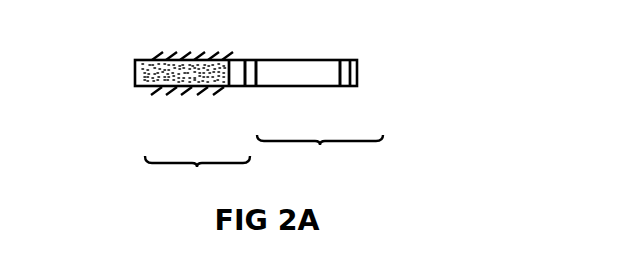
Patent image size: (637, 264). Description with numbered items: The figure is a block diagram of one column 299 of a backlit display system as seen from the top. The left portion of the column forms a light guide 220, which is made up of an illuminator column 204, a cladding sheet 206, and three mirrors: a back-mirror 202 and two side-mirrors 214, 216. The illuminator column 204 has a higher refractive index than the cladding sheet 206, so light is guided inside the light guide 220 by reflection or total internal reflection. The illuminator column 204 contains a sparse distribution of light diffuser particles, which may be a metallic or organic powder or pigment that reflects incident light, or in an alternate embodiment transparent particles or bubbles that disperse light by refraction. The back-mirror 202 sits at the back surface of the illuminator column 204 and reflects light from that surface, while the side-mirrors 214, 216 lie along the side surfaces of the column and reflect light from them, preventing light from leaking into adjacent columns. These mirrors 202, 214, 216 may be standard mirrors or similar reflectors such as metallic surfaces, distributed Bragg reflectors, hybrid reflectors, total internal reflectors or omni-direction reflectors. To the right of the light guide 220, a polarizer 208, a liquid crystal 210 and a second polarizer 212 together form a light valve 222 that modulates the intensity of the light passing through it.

The back-mirror 202 is at (137, 70).
The illuminator column 204 is at (178, 93).
The cladding sheet 206 is at (237, 86).
The polarizer 208 is at (256, 86).
The liquid crystal 210 is at (316, 86).
The polarizer 212 is at (350, 86).
The side-mirror 214 is at (193, 60).
The side-mirror 216 is at (158, 86).
The light guide 220 is at (197, 174).
The light valve 222 is at (320, 153).
The column 299 is at (414, 44).